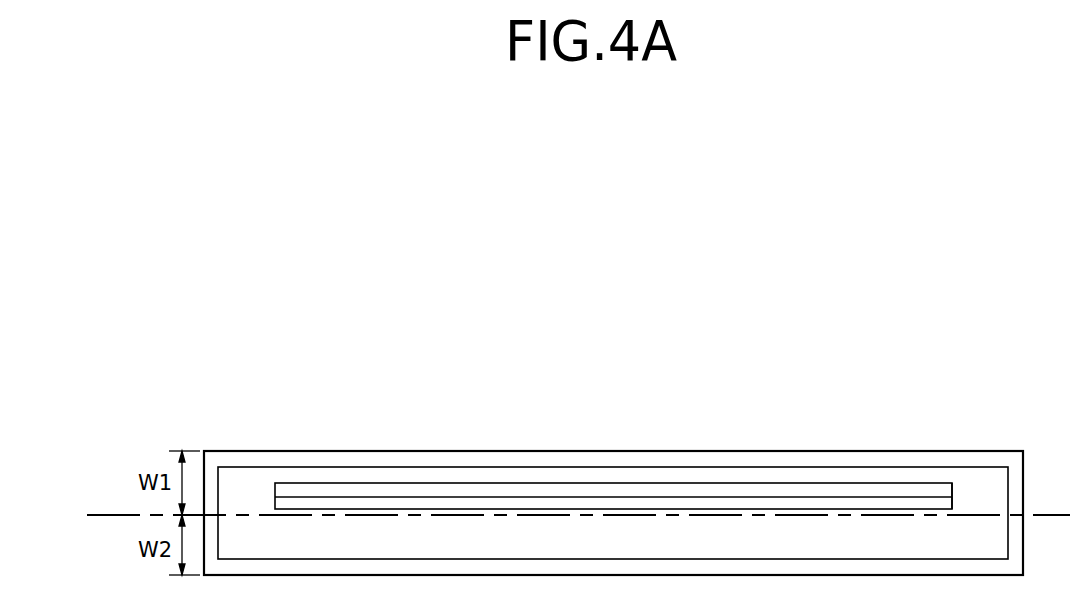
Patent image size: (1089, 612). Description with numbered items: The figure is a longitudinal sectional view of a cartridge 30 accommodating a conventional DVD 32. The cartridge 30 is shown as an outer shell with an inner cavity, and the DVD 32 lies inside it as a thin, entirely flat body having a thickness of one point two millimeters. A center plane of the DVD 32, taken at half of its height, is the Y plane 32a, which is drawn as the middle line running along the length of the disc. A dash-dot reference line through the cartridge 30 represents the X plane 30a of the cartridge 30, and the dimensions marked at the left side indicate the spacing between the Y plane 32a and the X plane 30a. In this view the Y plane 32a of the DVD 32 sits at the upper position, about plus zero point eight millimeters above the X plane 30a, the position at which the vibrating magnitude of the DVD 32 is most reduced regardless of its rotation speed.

The cartridge 30 is at (450, 450).
The X plane 30a is at (115, 513).
The DVD 32 is at (725, 490).
The Y plane 32a is at (907, 497).